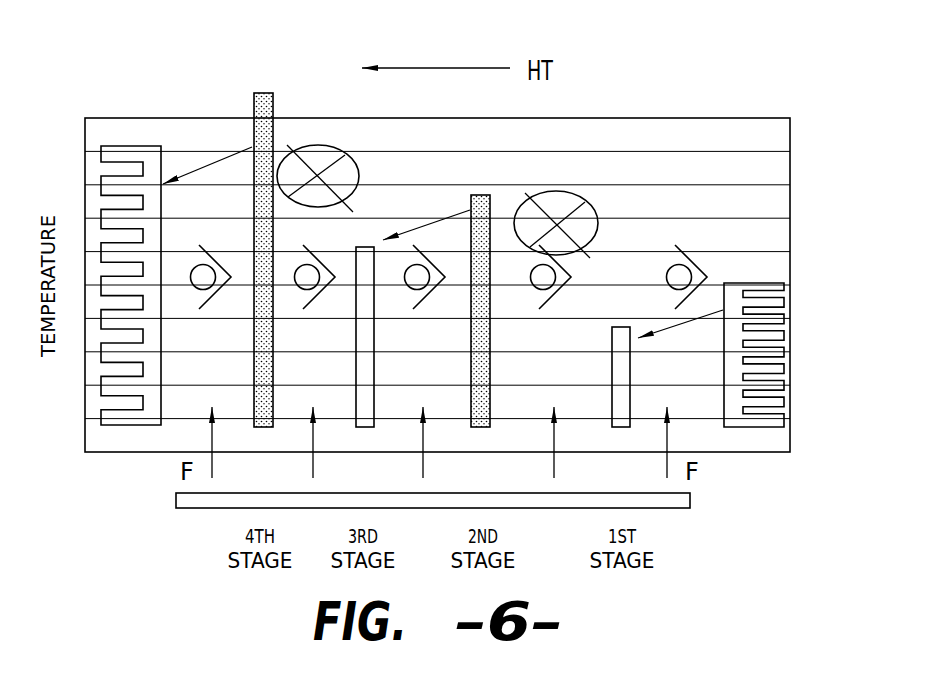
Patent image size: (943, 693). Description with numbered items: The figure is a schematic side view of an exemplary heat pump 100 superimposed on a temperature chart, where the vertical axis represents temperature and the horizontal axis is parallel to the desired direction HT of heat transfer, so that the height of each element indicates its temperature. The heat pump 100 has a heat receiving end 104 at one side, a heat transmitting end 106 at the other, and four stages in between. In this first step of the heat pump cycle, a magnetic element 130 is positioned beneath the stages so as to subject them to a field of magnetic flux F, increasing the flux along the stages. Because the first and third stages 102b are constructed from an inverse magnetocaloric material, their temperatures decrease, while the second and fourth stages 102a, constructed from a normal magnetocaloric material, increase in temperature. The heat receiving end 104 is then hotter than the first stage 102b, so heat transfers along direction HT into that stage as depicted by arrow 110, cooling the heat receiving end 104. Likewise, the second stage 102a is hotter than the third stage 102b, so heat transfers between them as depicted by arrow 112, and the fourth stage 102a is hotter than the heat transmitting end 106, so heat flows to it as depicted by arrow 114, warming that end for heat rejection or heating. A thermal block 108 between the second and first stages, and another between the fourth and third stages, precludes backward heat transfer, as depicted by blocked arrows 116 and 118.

The heat pump 100 is at (677, 133).
The second and fourth stages 102a is at (265, 93).
The first and third stages 102b is at (363, 247).
The heat receiving end 104 is at (772, 283).
The heat transmitting end 106 is at (126, 146).
The thermal block 108 is at (221, 297).
The arrow 110 is at (712, 313).
The arrow 112 is at (457, 215).
The arrow 114 is at (220, 159).
The blocked arrow 116 is at (556, 206).
The blocked arrow 118 is at (333, 145).
The magnetic element 130 is at (665, 508).